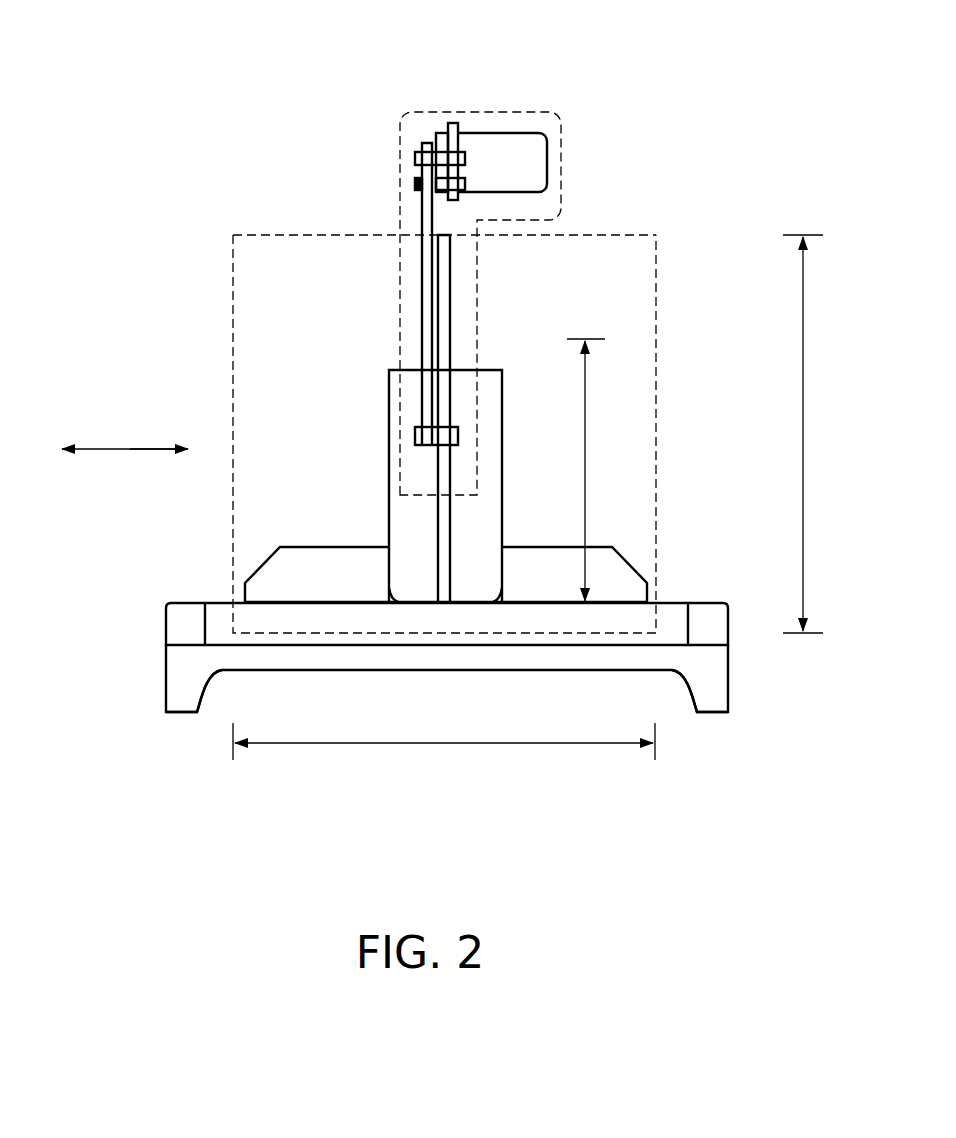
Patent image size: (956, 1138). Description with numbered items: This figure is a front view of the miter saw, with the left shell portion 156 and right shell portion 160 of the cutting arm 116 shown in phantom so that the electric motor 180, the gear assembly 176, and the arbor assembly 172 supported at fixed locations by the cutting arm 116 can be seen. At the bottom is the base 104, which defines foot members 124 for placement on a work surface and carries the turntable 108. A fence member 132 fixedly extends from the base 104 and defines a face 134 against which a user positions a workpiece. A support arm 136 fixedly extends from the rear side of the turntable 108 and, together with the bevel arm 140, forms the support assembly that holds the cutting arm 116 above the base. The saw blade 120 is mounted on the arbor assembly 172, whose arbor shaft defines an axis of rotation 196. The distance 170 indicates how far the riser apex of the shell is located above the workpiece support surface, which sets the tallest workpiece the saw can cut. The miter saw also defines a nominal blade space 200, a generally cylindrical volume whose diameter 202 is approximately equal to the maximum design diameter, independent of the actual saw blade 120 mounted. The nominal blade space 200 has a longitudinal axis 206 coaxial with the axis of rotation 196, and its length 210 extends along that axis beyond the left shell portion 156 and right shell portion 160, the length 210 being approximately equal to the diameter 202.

The base 104 is at (253, 657).
The turntable 108 is at (587, 622).
The cutting arm 116 is at (400, 222).
The saw blade 120 is at (452, 535).
The foot members 124 is at (180, 692).
The fence member 132 is at (300, 547).
The face 134 is at (298, 587).
The support arm 136 is at (387, 598).
The bevel arm 140 is at (389, 388).
The left shell portion 156 is at (400, 132).
The right shell portion 160 is at (562, 172).
The distance 170 is at (585, 450).
The arbor assembly 172 is at (386, 442).
The gear assembly 176 is at (386, 168).
The electric motor 180 is at (517, 98).
The axis of rotation 196 is at (142, 451).
The nominal blade space 200 is at (233, 340).
The diameter 202 is at (824, 434).
The longitudinal axis 206 is at (117, 447).
The length 210 is at (391, 742).